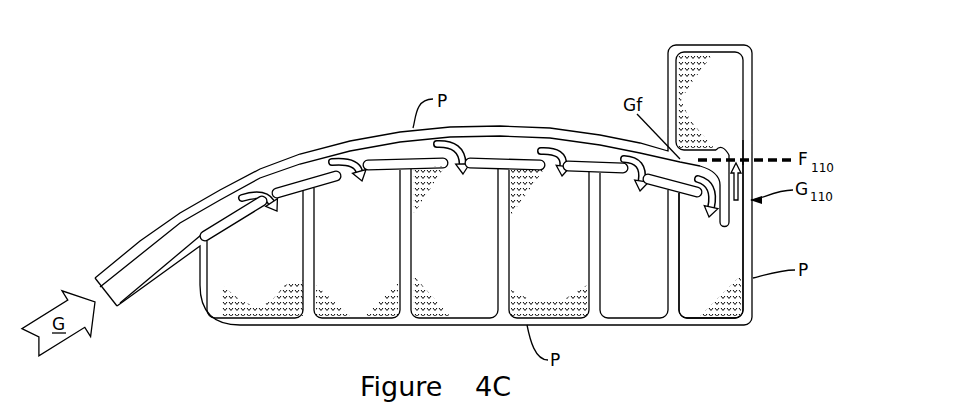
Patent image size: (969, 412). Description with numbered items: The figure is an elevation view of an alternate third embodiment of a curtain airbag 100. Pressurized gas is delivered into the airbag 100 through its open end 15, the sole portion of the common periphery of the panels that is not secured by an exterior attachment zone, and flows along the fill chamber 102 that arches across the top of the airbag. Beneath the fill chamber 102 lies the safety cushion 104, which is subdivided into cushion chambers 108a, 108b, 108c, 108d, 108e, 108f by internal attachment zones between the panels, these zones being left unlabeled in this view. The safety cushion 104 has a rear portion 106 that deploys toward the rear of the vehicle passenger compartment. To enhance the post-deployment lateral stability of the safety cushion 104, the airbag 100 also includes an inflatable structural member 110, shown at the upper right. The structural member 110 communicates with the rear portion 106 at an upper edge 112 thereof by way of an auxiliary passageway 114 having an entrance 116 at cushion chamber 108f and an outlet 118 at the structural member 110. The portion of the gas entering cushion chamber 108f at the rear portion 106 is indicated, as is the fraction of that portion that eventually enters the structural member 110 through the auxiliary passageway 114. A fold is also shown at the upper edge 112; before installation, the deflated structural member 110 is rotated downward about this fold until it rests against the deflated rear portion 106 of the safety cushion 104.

The curtain airbag 100 is at (246, 163).
The fill chamber 102 is at (168, 244).
The open end 15 is at (100, 286).
The safety cushion 104 is at (344, 226).
The rear portion 106 is at (710, 290).
The cushion chamber 108a is at (278, 272).
The cushion chamber 108b is at (384, 272).
The cushion chamber 108c is at (478, 272).
The cushion chamber 108d is at (574, 272).
The cushion chamber 108e is at (660, 272).
The cushion chamber 108f is at (739, 272).
The inflatable structural member 110 is at (720, 86).
The upper edge 112 is at (722, 148).
The auxiliary passageway 114 is at (753, 197).
The entrance 116 is at (733, 222).
The outlet 118 is at (737, 154).